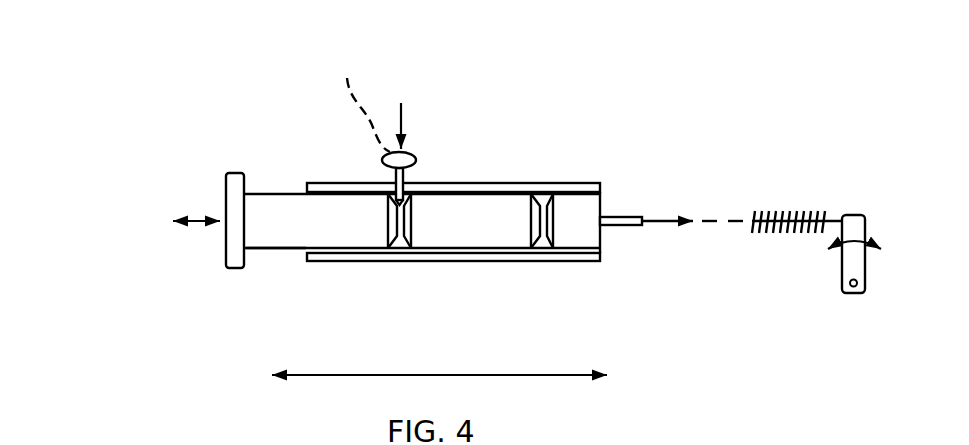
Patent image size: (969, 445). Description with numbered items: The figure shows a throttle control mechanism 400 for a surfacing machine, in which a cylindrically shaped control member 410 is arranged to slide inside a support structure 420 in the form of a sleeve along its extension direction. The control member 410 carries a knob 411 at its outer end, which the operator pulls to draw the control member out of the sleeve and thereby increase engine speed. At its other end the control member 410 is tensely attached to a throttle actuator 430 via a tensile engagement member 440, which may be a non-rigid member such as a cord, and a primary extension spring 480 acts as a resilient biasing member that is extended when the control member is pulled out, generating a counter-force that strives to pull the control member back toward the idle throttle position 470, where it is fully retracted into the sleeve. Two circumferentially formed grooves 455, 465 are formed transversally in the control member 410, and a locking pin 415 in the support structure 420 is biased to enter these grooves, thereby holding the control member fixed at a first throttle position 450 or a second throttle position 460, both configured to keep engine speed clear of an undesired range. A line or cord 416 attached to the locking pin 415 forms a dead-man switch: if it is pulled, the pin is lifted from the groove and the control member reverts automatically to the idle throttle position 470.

The throttle control mechanism 400 is at (121, 69).
The knob 411 is at (233, 173).
The control member 410 is at (289, 211).
The support structure 420 is at (330, 185).
The line or cord 416 is at (338, 84).
The locking pin 415 is at (407, 183).
The first throttle position 450 is at (400, 252).
The circumferentially formed groove 455 is at (393, 222).
The second throttle position 460 is at (542, 252).
The circumferentially formed groove 465 is at (536, 223).
The idle throttle position 470 is at (300, 258).
The tensile engagement member 440 is at (639, 220).
The primary extension spring 480 is at (777, 213).
The throttle actuator 430 is at (853, 215).